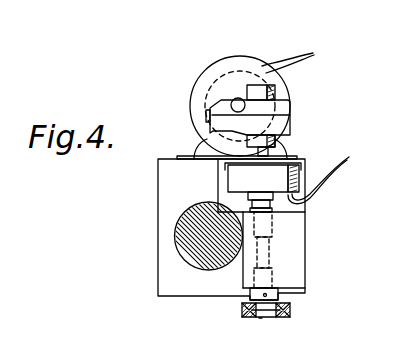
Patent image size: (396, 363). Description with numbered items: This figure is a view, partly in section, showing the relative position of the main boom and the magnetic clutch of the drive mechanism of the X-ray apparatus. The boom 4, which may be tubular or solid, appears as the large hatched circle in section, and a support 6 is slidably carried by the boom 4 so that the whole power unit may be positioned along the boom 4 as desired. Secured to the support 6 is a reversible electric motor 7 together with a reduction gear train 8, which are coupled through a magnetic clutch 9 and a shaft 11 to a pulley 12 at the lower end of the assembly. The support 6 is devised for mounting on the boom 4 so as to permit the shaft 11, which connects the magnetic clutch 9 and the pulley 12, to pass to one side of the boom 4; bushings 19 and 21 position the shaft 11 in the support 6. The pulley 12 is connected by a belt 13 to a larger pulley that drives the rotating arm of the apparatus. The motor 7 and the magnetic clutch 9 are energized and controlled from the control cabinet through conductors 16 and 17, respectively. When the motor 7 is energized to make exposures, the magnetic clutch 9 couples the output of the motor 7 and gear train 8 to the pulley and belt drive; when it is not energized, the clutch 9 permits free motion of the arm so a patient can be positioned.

The boom 4 is at (183, 225).
The support 6 is at (168, 196).
The reversible electric motor 7 is at (242, 70).
The reduction gear train 8 is at (293, 119).
The magnetic clutch 9 is at (293, 160).
The shaft 11 is at (265, 253).
The pulley 12 is at (259, 318).
The belt 13 is at (288, 308).
The conductor 16 is at (283, 67).
The conductor 17 is at (325, 183).
The bushing 19 is at (275, 222).
The bushing 21 is at (276, 283).